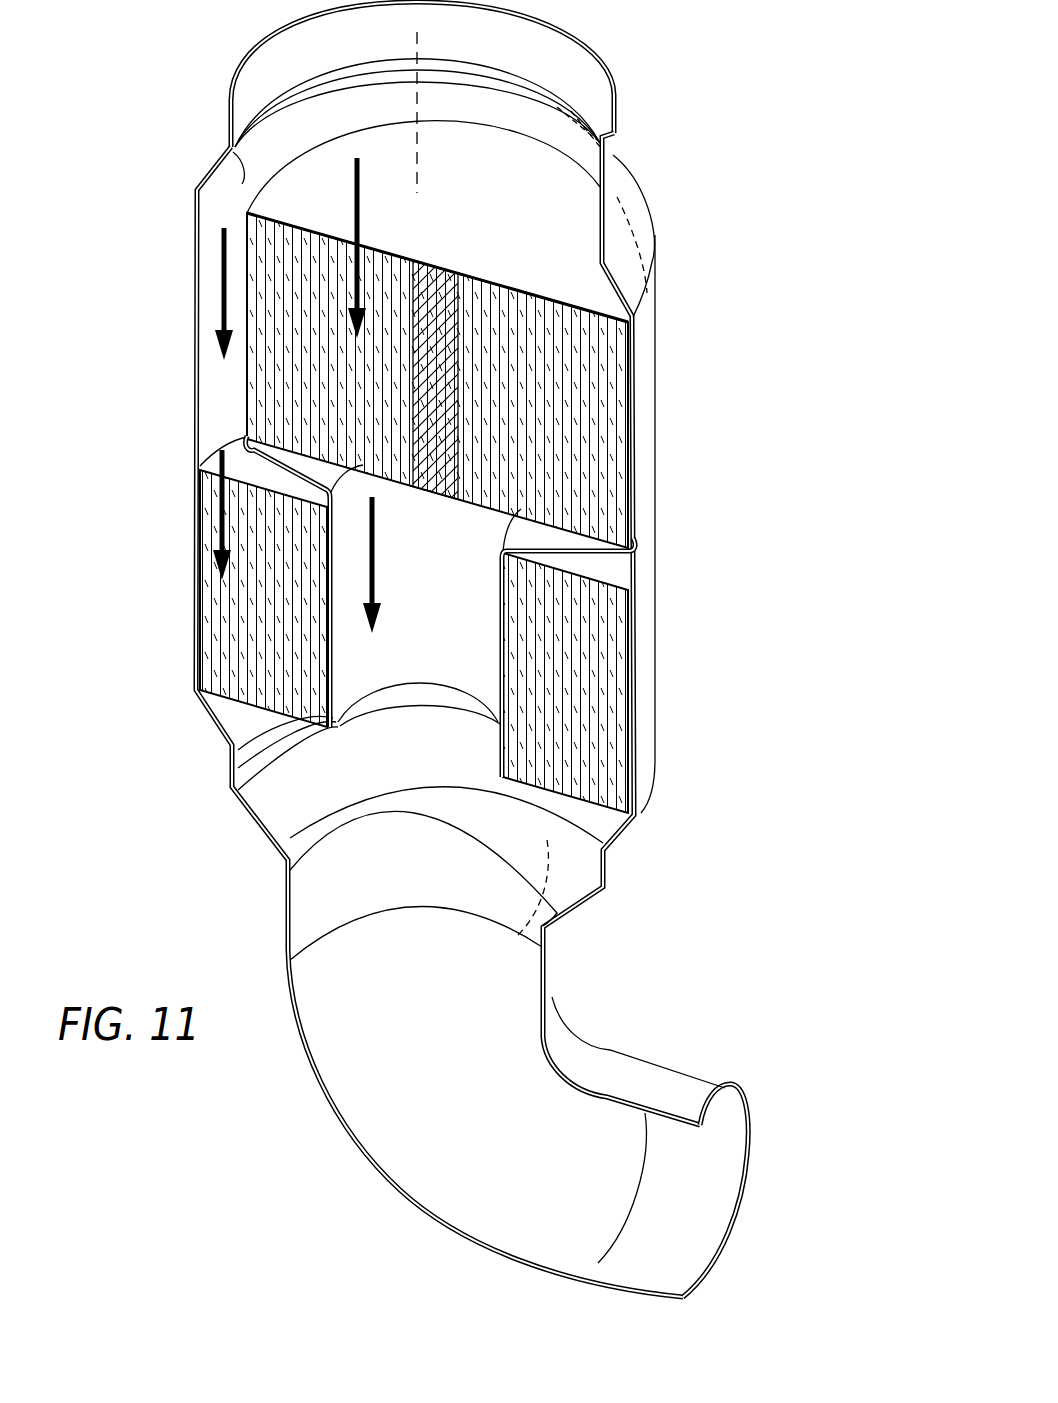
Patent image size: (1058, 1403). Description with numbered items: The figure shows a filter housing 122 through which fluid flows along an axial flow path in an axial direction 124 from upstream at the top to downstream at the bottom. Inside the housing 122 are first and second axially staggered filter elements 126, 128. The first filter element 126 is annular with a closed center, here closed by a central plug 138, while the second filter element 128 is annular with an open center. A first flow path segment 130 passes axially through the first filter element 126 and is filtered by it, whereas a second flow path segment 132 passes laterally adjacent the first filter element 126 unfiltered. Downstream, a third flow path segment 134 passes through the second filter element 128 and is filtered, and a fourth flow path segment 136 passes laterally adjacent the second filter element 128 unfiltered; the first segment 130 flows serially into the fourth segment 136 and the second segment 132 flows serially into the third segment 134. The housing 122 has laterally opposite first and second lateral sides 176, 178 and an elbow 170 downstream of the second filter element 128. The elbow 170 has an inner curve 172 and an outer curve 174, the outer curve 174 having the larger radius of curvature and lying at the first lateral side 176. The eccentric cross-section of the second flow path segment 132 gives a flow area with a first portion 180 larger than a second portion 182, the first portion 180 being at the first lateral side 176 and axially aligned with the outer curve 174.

The housing 122 is at (194, 323).
The axial direction 124 is at (418, 170).
The first filter element 126 is at (609, 423).
The second filter element 128 is at (612, 698).
The first flow path segment 130 is at (355, 203).
The second flow path segment 132 is at (222, 265).
The third flow path segment 134 is at (220, 522).
The fourth flow path segment 136 is at (374, 562).
The central plug 138 is at (433, 272).
The elbow 170 is at (572, 1048).
The inner curve 172 is at (612, 1051).
The outer curve 174 is at (380, 1147).
The first lateral side 176 is at (197, 466).
The second lateral side 178 is at (639, 573).
The first portion 180 is at (231, 150).
The second portion 182 is at (527, 125).